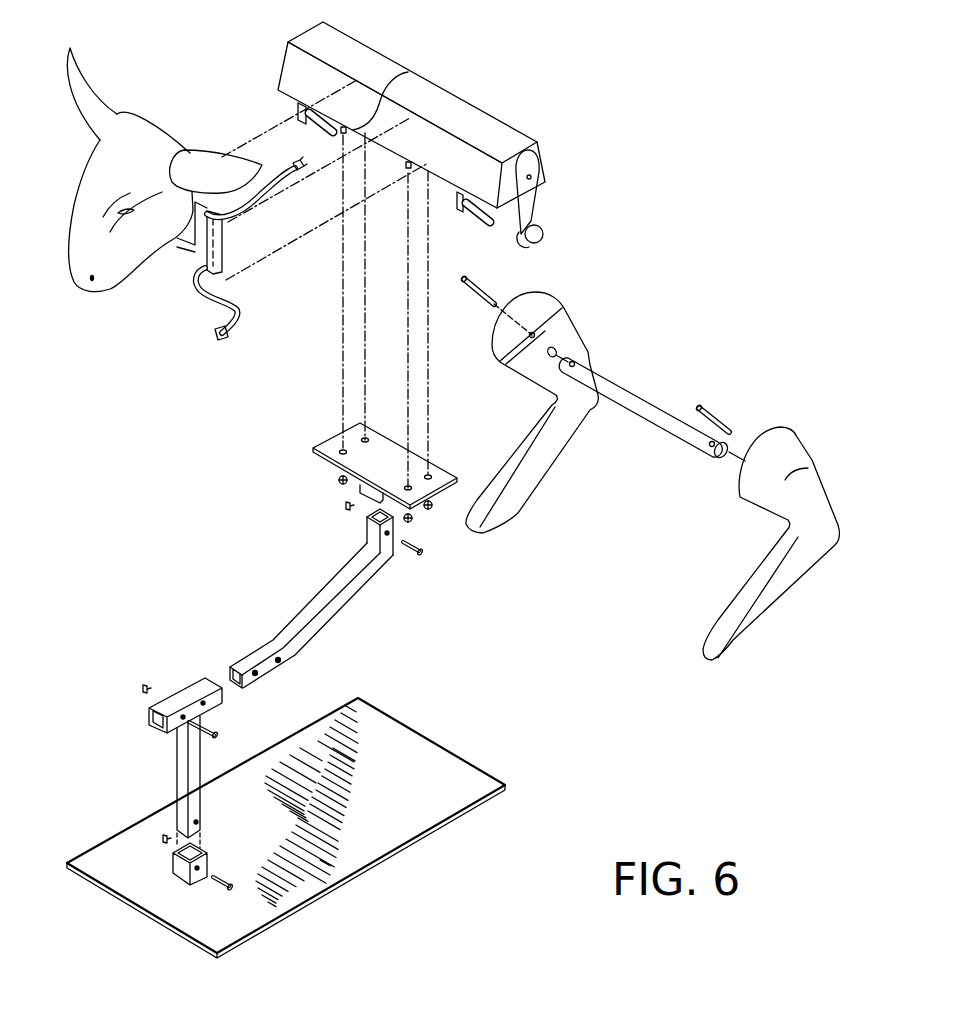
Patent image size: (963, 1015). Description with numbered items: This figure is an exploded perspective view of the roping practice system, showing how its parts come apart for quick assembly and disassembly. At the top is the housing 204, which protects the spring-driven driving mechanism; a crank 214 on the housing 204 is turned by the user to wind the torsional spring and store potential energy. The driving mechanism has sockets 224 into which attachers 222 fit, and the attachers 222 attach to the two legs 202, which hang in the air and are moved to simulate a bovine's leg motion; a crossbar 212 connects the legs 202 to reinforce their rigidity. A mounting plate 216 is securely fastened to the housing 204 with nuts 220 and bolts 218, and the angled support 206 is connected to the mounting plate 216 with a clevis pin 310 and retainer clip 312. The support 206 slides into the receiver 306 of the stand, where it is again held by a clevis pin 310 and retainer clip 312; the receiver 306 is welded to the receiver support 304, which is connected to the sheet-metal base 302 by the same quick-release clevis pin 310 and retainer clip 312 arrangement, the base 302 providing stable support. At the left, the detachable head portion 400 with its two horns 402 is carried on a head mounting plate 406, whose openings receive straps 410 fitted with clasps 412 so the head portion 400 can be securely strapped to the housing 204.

The legs 202 is at (537, 477).
The housing 204 is at (510, 135).
The support 206 is at (277, 623).
The crossbar 212 is at (597, 350).
The crank 214 is at (537, 203).
The mounting plate 216 is at (330, 448).
The bolts 218 is at (410, 72).
The nuts 220 is at (337, 480).
The attachers 222 is at (490, 293).
The sockets 224 is at (283, 140).
The base 302 is at (425, 760).
The receiver support 304 is at (175, 748).
The receiver 306 is at (180, 680).
The clevis pin 310 is at (405, 556).
The retainer clip 312 is at (345, 507).
The detachable head portion 400 is at (135, 107).
The horns 402 is at (83, 70).
The head mounting plate 406 is at (195, 253).
The straps 410 is at (233, 300).
The clasps 412 is at (227, 333).